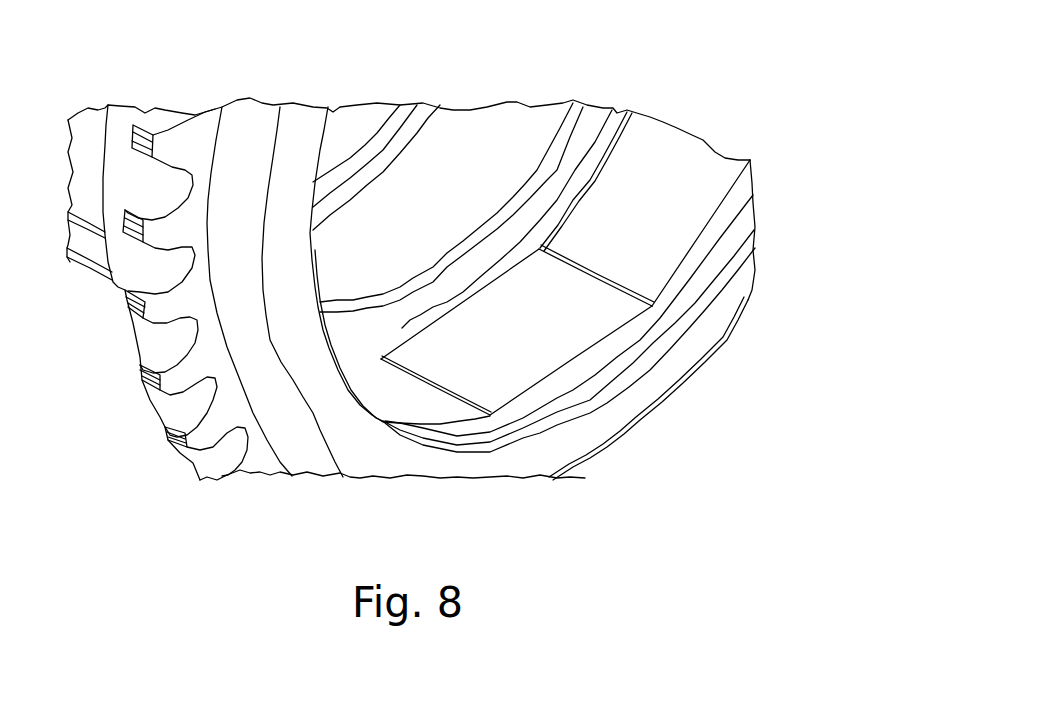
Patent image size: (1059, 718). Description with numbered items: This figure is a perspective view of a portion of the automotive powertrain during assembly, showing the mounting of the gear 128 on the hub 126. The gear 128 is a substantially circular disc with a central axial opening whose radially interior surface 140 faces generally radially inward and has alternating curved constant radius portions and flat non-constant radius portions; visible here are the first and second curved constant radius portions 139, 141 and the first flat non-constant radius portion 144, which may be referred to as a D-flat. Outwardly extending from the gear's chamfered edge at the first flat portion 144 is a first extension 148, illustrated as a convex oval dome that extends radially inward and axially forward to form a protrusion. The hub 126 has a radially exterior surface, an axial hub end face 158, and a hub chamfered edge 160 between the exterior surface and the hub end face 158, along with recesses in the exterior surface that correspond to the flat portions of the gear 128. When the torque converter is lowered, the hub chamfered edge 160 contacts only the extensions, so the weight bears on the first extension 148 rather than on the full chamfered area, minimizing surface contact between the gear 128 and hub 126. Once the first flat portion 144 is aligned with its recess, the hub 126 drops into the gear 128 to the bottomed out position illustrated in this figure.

The hub 126 is at (411, 256).
The gear 128 is at (291, 322).
The first curved constant radius portion 139 is at (702, 297).
The radially interior surface 140 is at (745, 178).
The second curved constant radius portion 141 is at (569, 366).
The first flat non-constant radius portion 144 is at (546, 387).
The first extension 148 is at (441, 230).
The hub end face 158 is at (466, 182).
The hub chamfered edge 160 is at (622, 140).